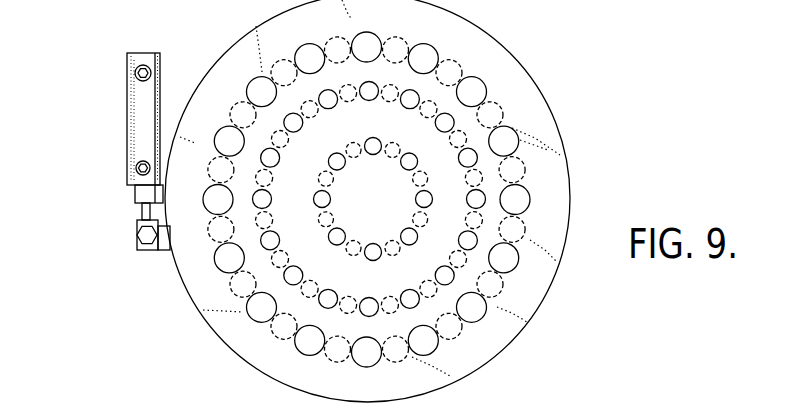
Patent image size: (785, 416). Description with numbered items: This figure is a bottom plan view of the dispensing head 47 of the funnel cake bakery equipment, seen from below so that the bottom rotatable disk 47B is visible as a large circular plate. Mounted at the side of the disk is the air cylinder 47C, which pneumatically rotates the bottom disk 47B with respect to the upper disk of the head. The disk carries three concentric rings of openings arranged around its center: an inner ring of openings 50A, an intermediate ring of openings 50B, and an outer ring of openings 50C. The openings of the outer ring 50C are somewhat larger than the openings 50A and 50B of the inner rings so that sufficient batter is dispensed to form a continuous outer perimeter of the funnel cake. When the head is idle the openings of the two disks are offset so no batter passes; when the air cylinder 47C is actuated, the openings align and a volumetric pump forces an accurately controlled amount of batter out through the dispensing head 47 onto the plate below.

The dispensing head 47 is at (239, 25).
The second rotatable disk 47B is at (540, 90).
The air cylinder 47C is at (127, 108).
The openings of inner ring 50A is at (413, 183).
The openings of intermediate ring 50B is at (410, 291).
The outer ring of openings 50C is at (517, 135).